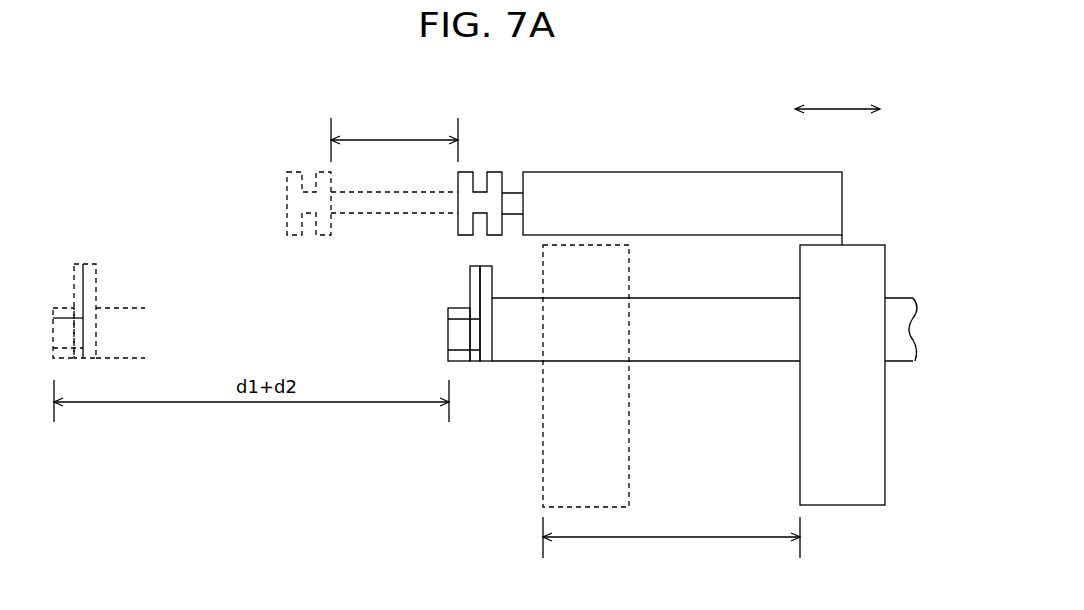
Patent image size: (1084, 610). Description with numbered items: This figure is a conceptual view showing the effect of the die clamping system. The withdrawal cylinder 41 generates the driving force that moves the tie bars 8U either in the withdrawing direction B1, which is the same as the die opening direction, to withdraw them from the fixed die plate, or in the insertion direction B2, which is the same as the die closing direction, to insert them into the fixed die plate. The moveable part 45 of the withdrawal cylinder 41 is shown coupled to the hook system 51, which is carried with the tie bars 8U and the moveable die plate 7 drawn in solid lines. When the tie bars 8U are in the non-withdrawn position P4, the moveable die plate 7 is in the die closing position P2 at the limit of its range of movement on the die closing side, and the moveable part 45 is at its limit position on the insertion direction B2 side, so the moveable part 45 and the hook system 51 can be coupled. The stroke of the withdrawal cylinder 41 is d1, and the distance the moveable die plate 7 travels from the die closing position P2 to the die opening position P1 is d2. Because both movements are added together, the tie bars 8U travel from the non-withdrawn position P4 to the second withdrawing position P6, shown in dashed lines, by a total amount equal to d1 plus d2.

The withdrawal cylinder 41 is at (665, 183).
The moveable part 45 is at (492, 173).
The hook system 51 is at (455, 355).
The moveable die plate 7 is at (858, 251).
The tie bar 8U is at (903, 306).
The die opening position P1 is at (533, 487).
The die closing position P2 is at (848, 518).
The non-withdrawn position P4 is at (720, 285).
The second withdrawing position P6 is at (131, 295).
The stroke of the withdrawal cylinder d1 is at (394, 139).
The movement distance of the moveable die plate d2 is at (671, 537).
The withdrawing direction B1 is at (818, 116).
The insertion direction B2 is at (895, 116).